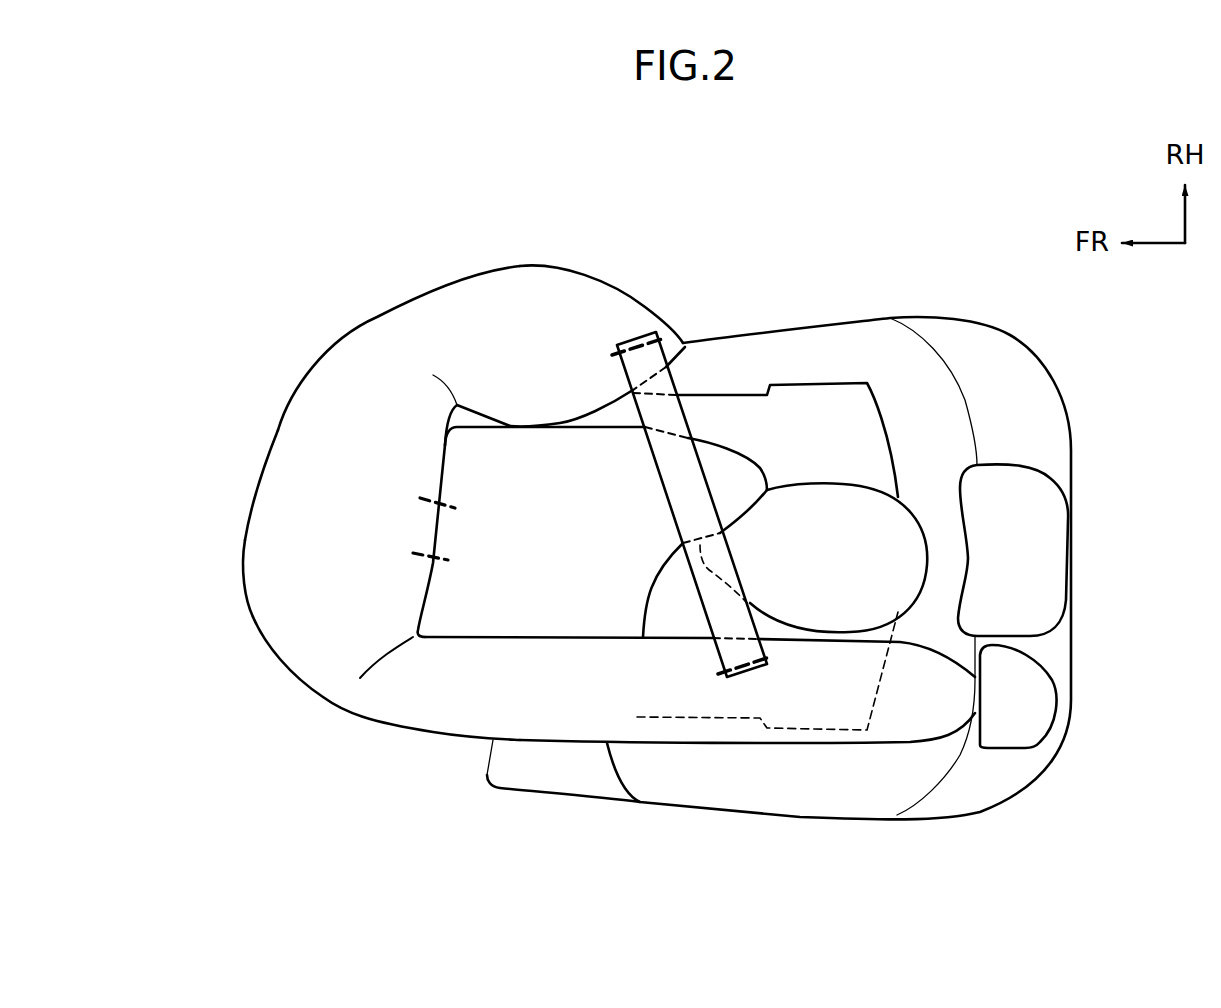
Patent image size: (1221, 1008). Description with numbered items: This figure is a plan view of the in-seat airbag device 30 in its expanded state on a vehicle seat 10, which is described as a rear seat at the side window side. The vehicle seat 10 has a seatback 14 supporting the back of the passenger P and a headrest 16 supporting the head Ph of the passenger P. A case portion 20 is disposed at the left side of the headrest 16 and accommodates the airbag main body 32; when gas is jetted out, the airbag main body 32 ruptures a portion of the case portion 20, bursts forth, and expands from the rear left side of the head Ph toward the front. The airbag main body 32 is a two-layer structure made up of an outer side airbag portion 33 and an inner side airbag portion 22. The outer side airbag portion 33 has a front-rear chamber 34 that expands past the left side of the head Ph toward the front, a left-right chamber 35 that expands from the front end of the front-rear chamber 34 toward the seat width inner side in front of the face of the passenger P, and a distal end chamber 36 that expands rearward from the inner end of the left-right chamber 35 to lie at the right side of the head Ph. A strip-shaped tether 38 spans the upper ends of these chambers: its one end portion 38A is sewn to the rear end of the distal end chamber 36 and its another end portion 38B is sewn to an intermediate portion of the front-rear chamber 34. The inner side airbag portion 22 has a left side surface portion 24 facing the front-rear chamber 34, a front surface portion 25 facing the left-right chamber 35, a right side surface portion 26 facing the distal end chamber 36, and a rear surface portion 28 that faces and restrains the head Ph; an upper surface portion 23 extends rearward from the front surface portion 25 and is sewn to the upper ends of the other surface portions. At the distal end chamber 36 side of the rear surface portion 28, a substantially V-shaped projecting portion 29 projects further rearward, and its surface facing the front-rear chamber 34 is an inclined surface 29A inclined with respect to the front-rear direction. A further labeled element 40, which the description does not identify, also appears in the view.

The vehicle seat 10 is at (968, 310).
The seatback 14 is at (1050, 457).
The headrest 16 is at (1042, 555).
The case portion 20 is at (1037, 698).
The inner side airbag portion 22 is at (543, 458).
The upper surface portion 23 is at (545, 607).
The left side surface portion 24 is at (470, 645).
The front surface portion 25 is at (411, 625).
The right side surface portion 26 is at (472, 427).
The rear surface portion 28 is at (653, 598).
The projecting portion 29 is at (775, 475).
The inclined surface 29A is at (707, 548).
The in-seat airbag device 30 is at (346, 736).
The airbag main body 32 is at (231, 560).
The outer side airbag portion 33 is at (275, 427).
The front-rear chamber 34 is at (533, 717).
The left-right chamber 35 is at (277, 512).
The distal end chamber 36 is at (557, 300).
The tether 38 is at (656, 488).
The one end portion 38A is at (623, 337).
The another end portion 38B is at (763, 660).
The airbag 40 is at (440, 530).
The passenger P is at (908, 502).
The head Ph is at (827, 507).